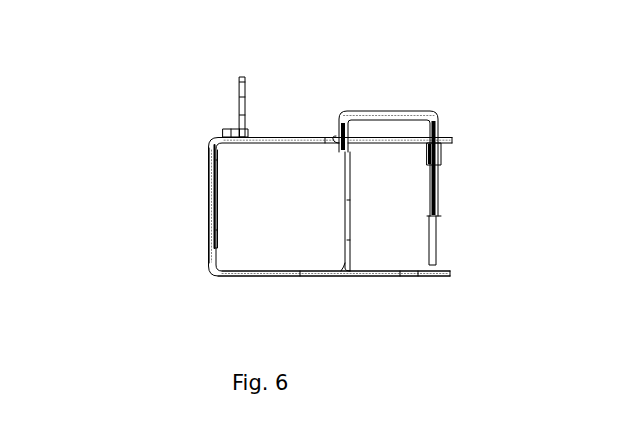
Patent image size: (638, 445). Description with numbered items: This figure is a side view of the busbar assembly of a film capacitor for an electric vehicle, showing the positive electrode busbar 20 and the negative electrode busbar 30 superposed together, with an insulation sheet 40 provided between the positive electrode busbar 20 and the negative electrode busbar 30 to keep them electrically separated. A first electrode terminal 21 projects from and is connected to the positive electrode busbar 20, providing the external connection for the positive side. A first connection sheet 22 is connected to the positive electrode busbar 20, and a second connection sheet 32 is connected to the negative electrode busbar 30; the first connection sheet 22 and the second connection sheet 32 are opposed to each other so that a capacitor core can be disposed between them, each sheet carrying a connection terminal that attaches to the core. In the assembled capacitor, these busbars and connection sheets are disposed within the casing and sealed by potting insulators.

The positive electrode busbar 20 is at (213, 232).
The first electrode terminal 21 is at (247, 97).
The first connection sheet 22 is at (298, 274).
The negative electrode busbar 30 is at (214, 247).
The second connection sheet 32 is at (287, 140).
The insulation sheet 40 is at (210, 174).